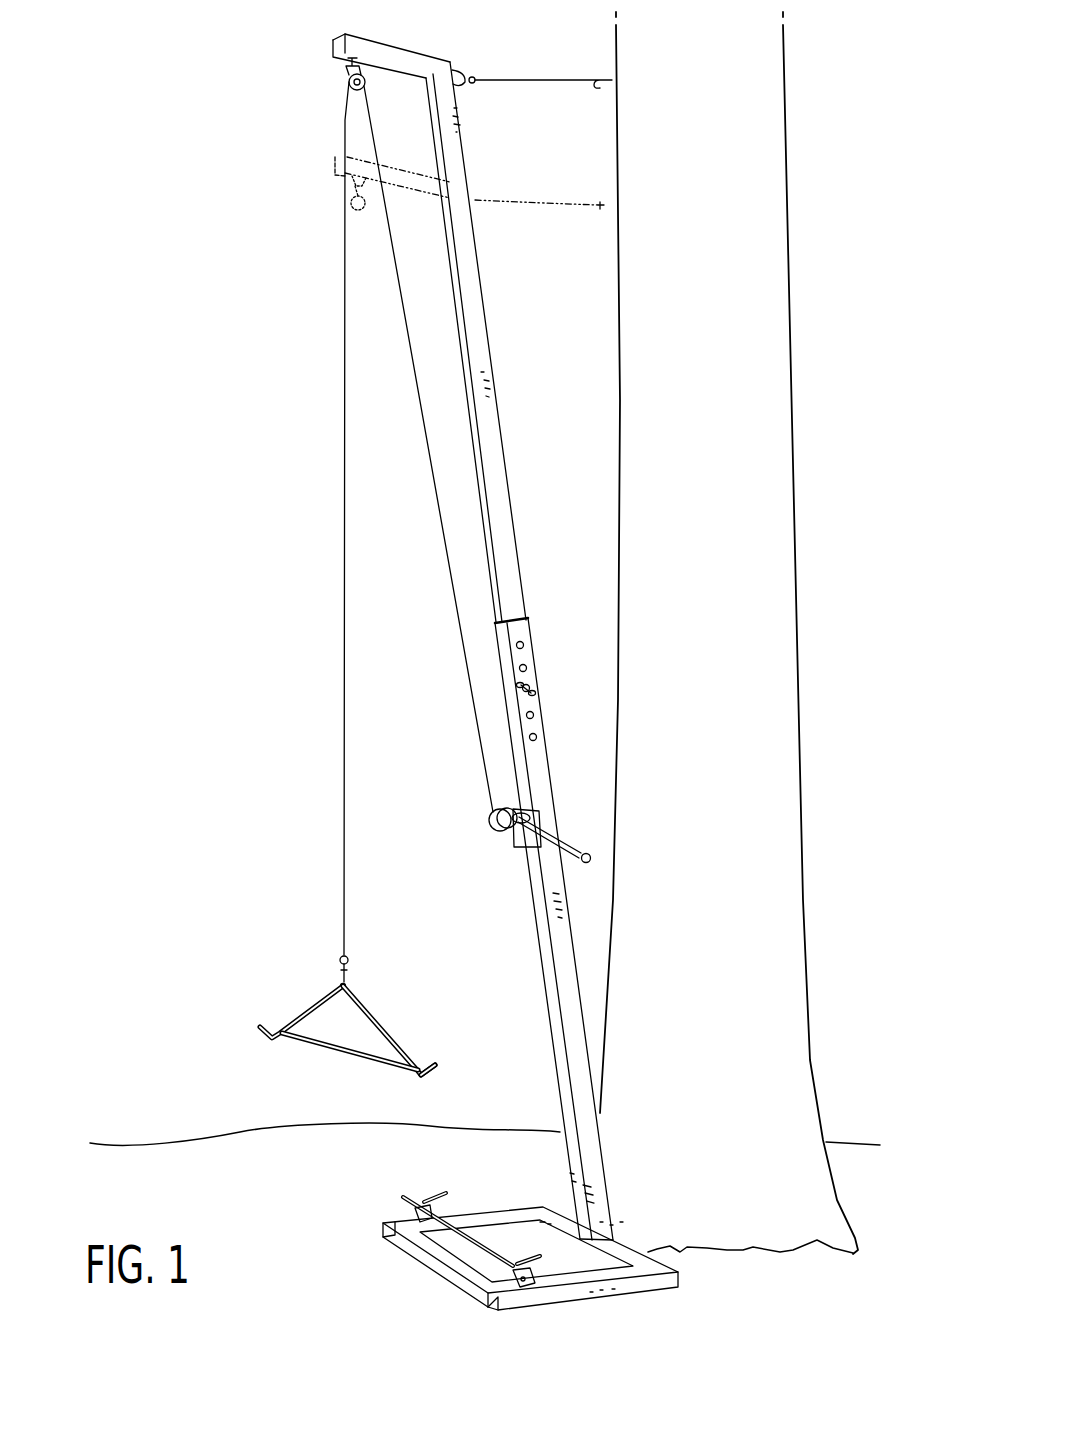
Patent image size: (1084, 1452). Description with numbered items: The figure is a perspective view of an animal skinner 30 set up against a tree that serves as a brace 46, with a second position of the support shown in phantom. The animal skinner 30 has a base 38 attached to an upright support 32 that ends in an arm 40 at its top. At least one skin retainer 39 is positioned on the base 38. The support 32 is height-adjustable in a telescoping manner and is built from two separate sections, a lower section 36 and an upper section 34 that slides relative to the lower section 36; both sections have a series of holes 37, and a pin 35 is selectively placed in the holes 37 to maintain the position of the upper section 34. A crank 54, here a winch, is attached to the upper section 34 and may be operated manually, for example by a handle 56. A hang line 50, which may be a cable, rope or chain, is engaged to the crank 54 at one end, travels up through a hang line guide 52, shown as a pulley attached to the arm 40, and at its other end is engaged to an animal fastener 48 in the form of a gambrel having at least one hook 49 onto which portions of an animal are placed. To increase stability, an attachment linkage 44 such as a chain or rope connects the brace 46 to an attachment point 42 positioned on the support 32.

The animal skinner 30 is at (214, 150).
The support 32 is at (526, 568).
The upper section 34 is at (480, 333).
The pin 35 is at (536, 696).
The lower section 36 is at (563, 952).
The hole 37 is at (526, 666).
The base 38 is at (493, 1213).
The skin retainer 39 is at (403, 1197).
The arm 40 is at (400, 48).
The attachment point 42 is at (463, 68).
The attachment linkage 44 is at (545, 80).
The brace 46 is at (750, 218).
The animal fastener 48 is at (307, 1010).
The hook 49 is at (433, 1067).
The hang line 50 is at (343, 706).
The hang line guide 52 is at (347, 95).
The crank 54 is at (492, 834).
The winch handle 56 is at (582, 852).